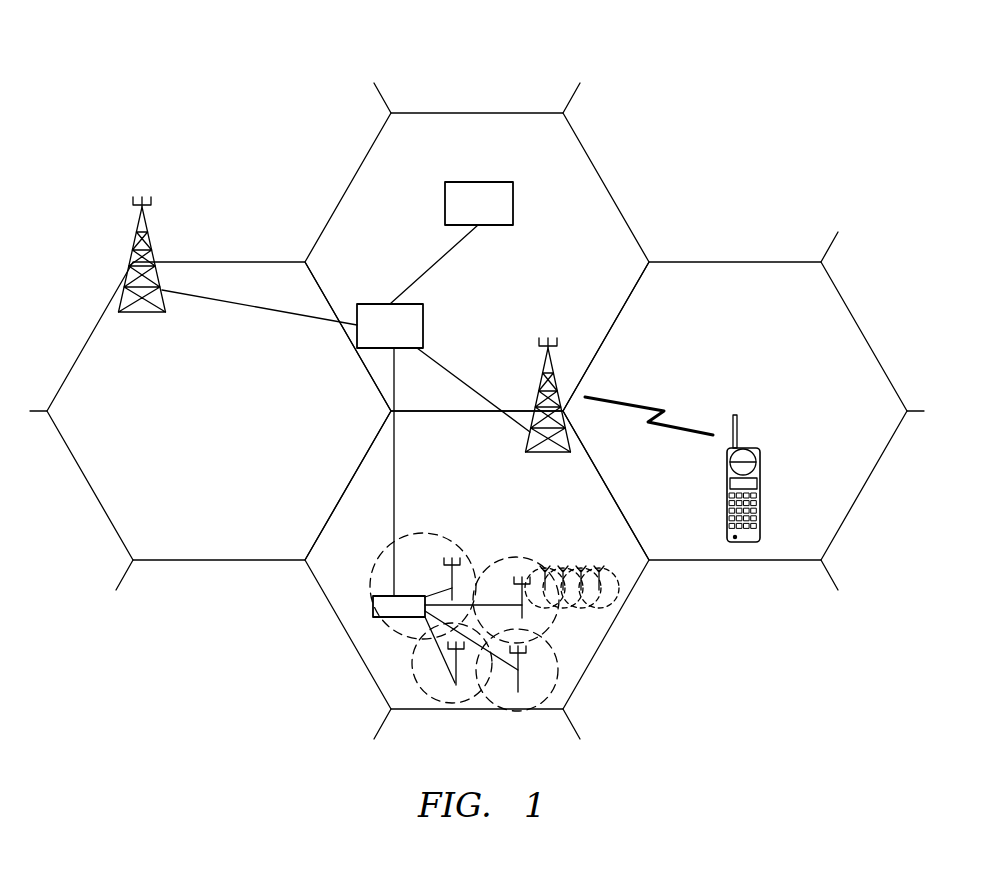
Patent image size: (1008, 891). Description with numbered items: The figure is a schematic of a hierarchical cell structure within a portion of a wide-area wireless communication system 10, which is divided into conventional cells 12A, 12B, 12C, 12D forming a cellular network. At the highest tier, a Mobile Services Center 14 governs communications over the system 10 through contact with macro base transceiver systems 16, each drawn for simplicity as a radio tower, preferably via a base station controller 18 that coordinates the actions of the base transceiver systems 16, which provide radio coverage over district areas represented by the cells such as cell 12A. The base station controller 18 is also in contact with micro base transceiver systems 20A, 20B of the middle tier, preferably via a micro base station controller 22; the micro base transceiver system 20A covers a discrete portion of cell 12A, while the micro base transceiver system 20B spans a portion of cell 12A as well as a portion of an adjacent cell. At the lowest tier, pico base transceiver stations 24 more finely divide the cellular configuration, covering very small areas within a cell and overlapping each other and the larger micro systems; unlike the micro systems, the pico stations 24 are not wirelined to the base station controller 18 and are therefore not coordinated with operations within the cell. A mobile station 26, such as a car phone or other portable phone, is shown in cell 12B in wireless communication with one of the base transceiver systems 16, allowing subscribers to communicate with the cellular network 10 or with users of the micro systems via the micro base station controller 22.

The wide-area wireless communication system 10 is at (733, 106).
The cell 12A is at (585, 670).
The cell 12B is at (845, 298).
The cell 12C is at (118, 532).
The cell 12D is at (590, 160).
The Mobile Services Center 14 is at (513, 205).
The base transceiver system 16 is at (136, 226).
The base station controller 18 is at (423, 322).
The micro base transceiver system 20A is at (468, 564).
The micro base transceiver system 20B is at (500, 700).
The micro base station controller 22 is at (373, 607).
The pico base transceiver station 24 is at (596, 619).
The mobile station 26 is at (760, 463).